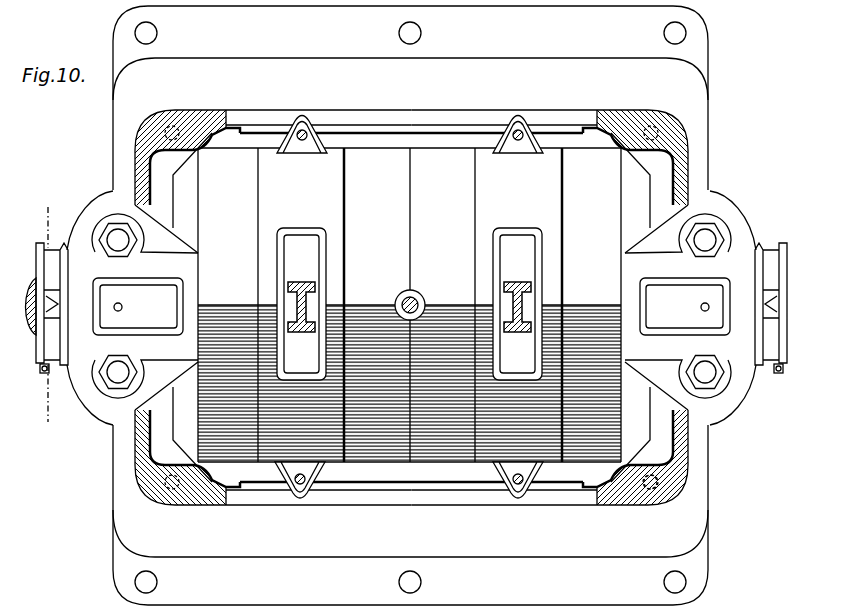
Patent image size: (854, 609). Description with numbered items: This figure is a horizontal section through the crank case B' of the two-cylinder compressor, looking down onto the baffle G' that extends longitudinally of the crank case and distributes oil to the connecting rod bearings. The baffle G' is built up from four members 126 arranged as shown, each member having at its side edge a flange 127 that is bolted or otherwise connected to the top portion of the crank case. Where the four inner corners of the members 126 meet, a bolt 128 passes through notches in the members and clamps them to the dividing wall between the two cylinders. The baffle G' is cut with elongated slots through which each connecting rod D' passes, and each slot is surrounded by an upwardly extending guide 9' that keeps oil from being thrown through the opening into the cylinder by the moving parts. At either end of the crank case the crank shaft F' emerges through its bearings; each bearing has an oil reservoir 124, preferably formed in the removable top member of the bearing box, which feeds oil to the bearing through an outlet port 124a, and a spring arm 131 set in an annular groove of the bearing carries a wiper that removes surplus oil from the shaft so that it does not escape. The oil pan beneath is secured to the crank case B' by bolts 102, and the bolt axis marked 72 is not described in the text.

The bolt axis 72 is at (48, 314).
The crank shaft F' is at (26, 276).
The spring arm 131 is at (41, 373).
The oil reservoir 124 is at (668, 342).
The outlet port 124a is at (121, 310).
The flange 127 is at (313, 100).
The baffle member 126 is at (428, 148).
The guide 9' is at (409, 281).
The connecting rod D' is at (409, 303).
The baffle G' is at (409, 305).
The bolt 128 is at (403, 296).
The crank case B' is at (443, 307).
The bolt 102 is at (648, 489).